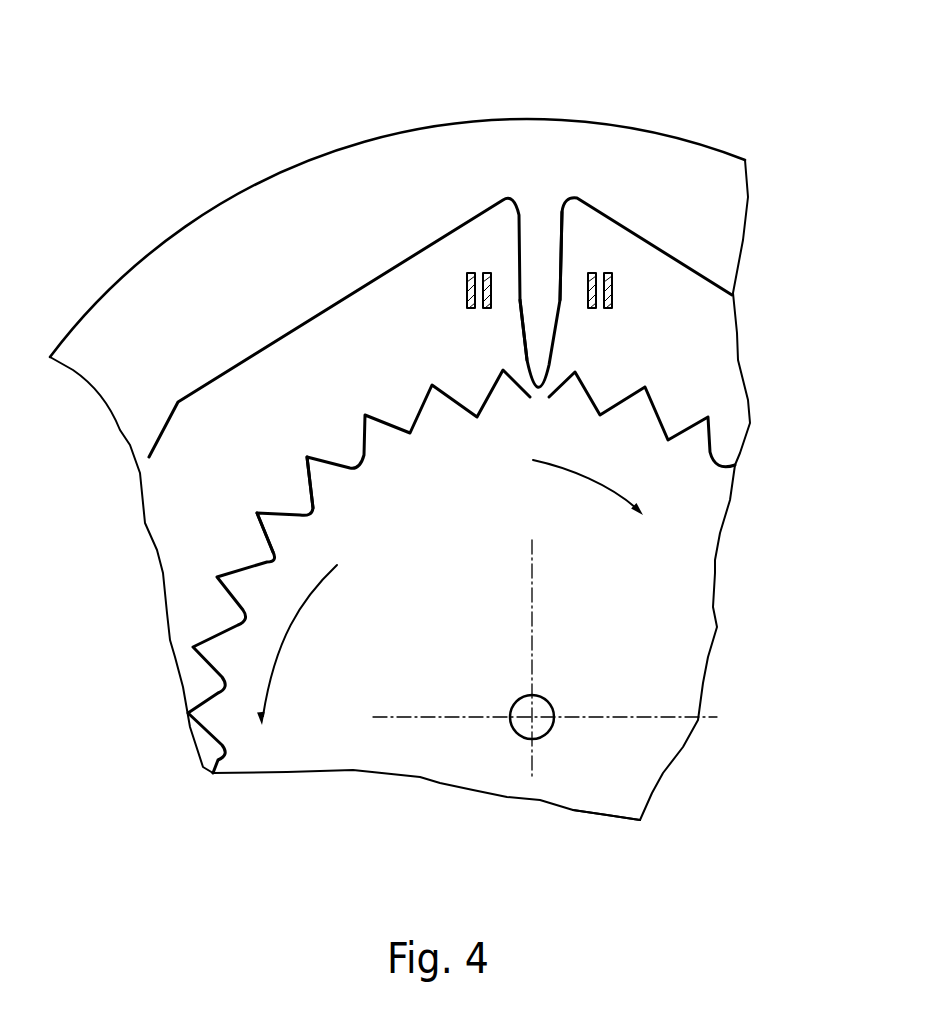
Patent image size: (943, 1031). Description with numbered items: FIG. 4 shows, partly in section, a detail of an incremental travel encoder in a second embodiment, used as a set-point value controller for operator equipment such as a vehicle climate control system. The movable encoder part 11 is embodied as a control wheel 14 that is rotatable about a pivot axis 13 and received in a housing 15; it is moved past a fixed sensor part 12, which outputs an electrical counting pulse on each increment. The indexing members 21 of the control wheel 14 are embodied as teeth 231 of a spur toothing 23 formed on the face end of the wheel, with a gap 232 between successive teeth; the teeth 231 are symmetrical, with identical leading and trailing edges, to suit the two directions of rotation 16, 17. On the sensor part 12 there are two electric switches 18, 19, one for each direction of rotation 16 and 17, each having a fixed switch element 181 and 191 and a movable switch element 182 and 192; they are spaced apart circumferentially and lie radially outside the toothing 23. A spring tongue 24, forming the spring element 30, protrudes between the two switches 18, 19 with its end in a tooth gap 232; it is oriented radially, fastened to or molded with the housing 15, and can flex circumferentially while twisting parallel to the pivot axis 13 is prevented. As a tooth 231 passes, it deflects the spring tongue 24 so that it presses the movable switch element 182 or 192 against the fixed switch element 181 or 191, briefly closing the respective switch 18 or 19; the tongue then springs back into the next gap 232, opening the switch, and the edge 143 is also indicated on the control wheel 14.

The encoder part 11 is at (678, 600).
The sensor part 12 is at (596, 236).
The pivot axis 13 is at (528, 722).
The control wheel 14 is at (646, 675).
The body edge 143 is at (648, 760).
The housing 15 is at (312, 198).
The direction of rotation 16 is at (613, 487).
The direction of rotation 17 is at (273, 650).
The electric switch 18 is at (708, 243).
The fixed switch element 181 is at (613, 293).
The movable switch element 182 is at (590, 308).
The electric switch 19 is at (468, 157).
The fixed switch element 191 is at (463, 287).
The movable switch element 192 is at (493, 277).
The indexing member 21 is at (725, 433).
The spur toothing 23 is at (307, 571).
The tooth 231 is at (272, 522).
The gap 232 is at (258, 552).
The spring tongue 24 is at (527, 335).
The spring element 30 is at (572, 345).